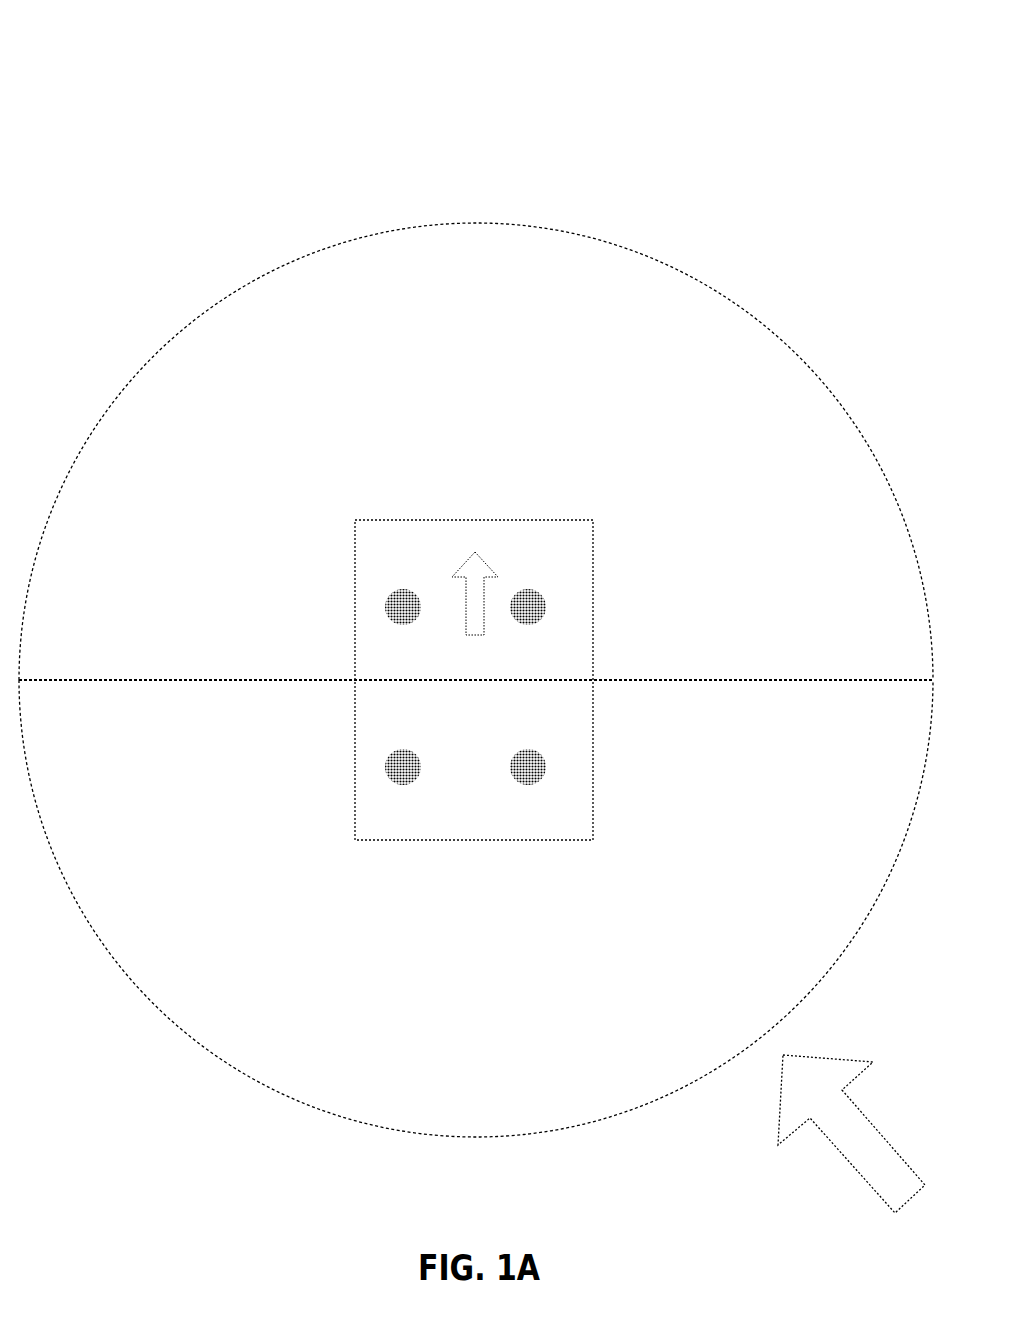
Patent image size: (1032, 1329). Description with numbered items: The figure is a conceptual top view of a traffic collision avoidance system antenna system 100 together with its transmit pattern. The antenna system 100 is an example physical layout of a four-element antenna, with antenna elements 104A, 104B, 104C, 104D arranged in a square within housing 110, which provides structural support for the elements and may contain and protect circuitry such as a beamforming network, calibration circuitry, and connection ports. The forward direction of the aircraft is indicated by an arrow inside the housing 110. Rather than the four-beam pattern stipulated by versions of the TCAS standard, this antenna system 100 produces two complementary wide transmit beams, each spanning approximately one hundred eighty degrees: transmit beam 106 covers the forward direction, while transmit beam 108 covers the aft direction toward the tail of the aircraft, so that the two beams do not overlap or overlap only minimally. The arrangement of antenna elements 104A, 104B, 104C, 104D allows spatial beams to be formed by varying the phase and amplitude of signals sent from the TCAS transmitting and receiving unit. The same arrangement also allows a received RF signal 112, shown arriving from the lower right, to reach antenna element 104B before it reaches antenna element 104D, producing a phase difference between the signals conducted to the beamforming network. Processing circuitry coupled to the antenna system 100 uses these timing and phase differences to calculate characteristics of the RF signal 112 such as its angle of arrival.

The antenna system 100 is at (810, 32).
The antenna element 104A is at (530, 625).
The antenna element 104B is at (529, 785).
The antenna element 104C is at (403, 785).
The antenna element 104D is at (403, 625).
The transmit beam 106 is at (265, 318).
The transmit beam 108 is at (220, 1002).
The housing 110 is at (521, 680).
The RF signal 112 is at (775, 1213).